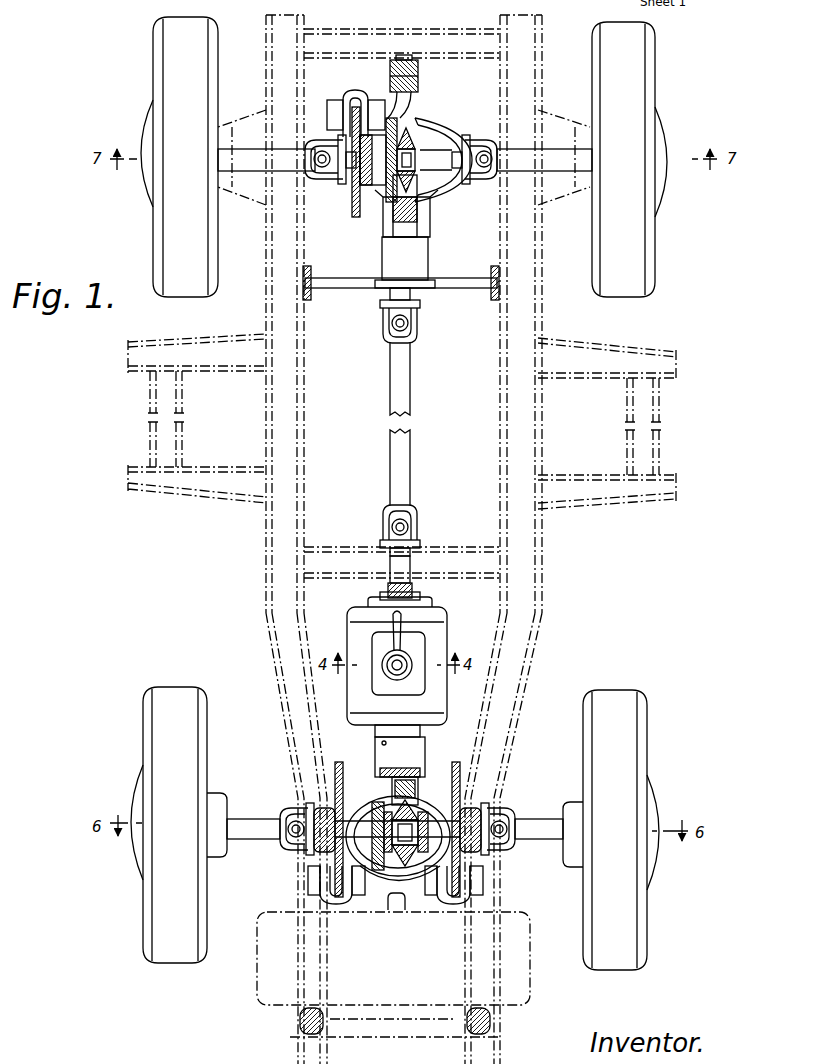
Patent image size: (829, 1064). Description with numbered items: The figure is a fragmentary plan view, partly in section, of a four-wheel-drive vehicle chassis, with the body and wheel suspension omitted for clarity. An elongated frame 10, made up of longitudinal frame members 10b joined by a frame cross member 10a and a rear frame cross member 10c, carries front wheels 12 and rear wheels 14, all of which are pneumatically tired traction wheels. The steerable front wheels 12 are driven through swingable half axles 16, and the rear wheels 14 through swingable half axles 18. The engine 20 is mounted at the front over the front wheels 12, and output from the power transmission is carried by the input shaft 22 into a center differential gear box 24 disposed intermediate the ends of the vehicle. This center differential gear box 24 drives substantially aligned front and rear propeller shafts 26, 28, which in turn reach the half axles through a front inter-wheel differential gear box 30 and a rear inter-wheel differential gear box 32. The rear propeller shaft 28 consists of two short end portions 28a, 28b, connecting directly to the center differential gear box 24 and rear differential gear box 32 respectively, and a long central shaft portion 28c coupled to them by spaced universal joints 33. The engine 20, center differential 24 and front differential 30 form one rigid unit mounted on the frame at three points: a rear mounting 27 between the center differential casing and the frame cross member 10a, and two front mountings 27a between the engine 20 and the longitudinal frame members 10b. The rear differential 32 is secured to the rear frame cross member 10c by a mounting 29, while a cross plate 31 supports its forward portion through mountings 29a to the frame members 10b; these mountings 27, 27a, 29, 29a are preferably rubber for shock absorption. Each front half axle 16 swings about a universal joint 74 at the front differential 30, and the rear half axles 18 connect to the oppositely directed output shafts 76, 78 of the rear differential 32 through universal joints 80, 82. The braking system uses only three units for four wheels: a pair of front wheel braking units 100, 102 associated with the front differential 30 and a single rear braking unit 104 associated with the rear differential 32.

The frame 10 is at (262, 625).
The frame cross member 10a is at (330, 547).
The longitudinal frame members 10b is at (297, 738).
The rear frame cross member 10c is at (369, 37).
The front wheels 12 is at (162, 723).
The rear wheels 14 is at (175, 42).
The front half axles 16 is at (247, 818).
The rear half axles 18 is at (243, 150).
The engine 20 is at (512, 989).
The input shaft 22 is at (395, 737).
The center differential gear box 24 is at (438, 689).
The front propeller shaft 26 is at (400, 770).
The rear mounting 27 is at (421, 597).
The front mountings 27a is at (490, 1023).
The rear propeller shaft 28 is at (415, 446).
The end portion 28a is at (411, 571).
The end portion 28b is at (418, 228).
The central shaft portion 28c is at (405, 389).
The mounting 29 is at (420, 76).
The mountings 29a is at (313, 288).
The front inter-wheel differential gear box 30 is at (358, 794).
The cross plate 31 is at (453, 279).
The rear inter-wheel differential gear box 32 is at (439, 213).
The universal joints 33 is at (419, 327).
The universal joint 74 is at (283, 850).
The output shaft 76 is at (355, 160).
The output shaft 78 is at (447, 152).
The universal joint 80 is at (312, 173).
The universal joint 82 is at (493, 140).
The front wheel braking unit 100 is at (336, 910).
The front wheel braking unit 102 is at (438, 910).
The rear braking unit 104 is at (349, 91).